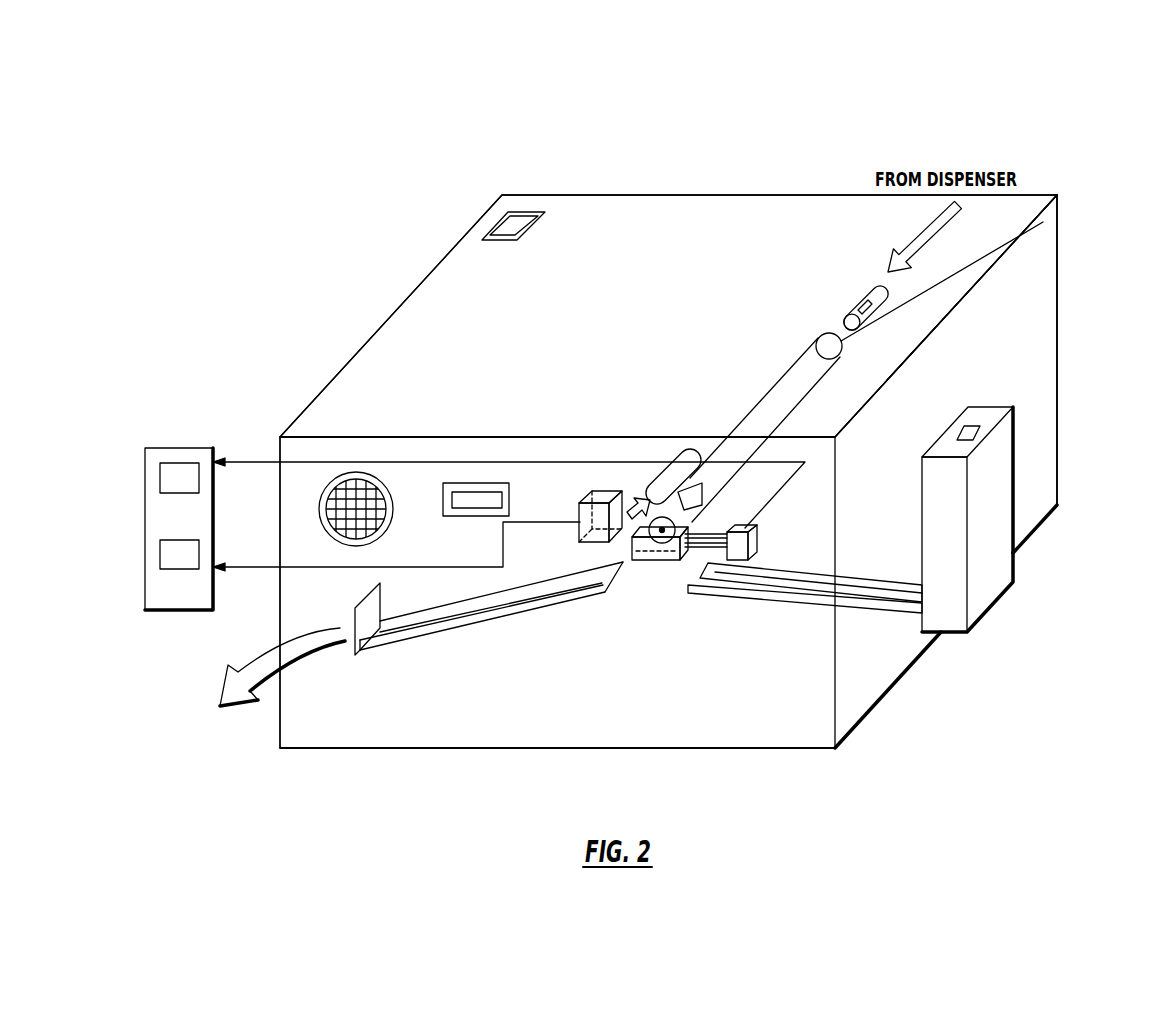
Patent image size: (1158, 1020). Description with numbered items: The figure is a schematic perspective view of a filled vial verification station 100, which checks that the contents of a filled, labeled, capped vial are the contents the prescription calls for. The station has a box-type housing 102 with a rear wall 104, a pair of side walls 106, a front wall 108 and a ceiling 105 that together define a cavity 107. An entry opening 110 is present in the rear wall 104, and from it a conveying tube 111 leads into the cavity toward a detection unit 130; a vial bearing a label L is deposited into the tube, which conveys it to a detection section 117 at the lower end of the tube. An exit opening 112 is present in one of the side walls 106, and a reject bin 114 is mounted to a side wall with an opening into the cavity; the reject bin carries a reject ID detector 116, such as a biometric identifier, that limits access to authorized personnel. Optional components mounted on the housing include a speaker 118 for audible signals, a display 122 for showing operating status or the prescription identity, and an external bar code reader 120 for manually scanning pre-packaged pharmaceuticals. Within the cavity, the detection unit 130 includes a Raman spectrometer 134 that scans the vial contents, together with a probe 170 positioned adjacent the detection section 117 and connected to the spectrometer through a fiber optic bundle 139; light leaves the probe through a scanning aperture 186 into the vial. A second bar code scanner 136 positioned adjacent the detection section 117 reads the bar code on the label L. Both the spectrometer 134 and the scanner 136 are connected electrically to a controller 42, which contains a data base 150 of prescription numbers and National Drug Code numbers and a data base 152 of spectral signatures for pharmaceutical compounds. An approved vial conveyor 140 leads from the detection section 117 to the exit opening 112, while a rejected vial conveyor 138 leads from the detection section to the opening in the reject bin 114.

The verification station 100 is at (423, 253).
The housing 102 is at (1058, 287).
The rear wall 104 is at (1063, 303).
The ceiling 105 is at (632, 225).
The side walls 106 is at (315, 397).
The cavity 107 is at (982, 230).
The front wall 108 is at (363, 730).
The entry opening 110 is at (1043, 222).
The conveying tube 111 is at (813, 378).
The exit opening 112 is at (360, 609).
The reject bin 114 is at (987, 617).
The reject ID detector 116 is at (972, 431).
The detection section 117 is at (653, 487).
The speaker 118 is at (355, 507).
The external bar code reader 120 is at (467, 500).
The display 122 is at (517, 222).
The detection unit 130 is at (797, 545).
The Raman spectrometer 134 is at (757, 533).
The second bar code scanner 136 is at (606, 491).
The rejected vial conveyor 138 is at (768, 585).
The fiber optic bundle 139 is at (713, 547).
The approved vial conveyor 140 is at (502, 603).
The data base 150 is at (173, 477).
The data base of spectral signatures 152 is at (173, 557).
The probe 170 is at (672, 557).
The scanning aperture 186 is at (662, 535).
The controller 42 is at (190, 450).
The label L is at (855, 300).